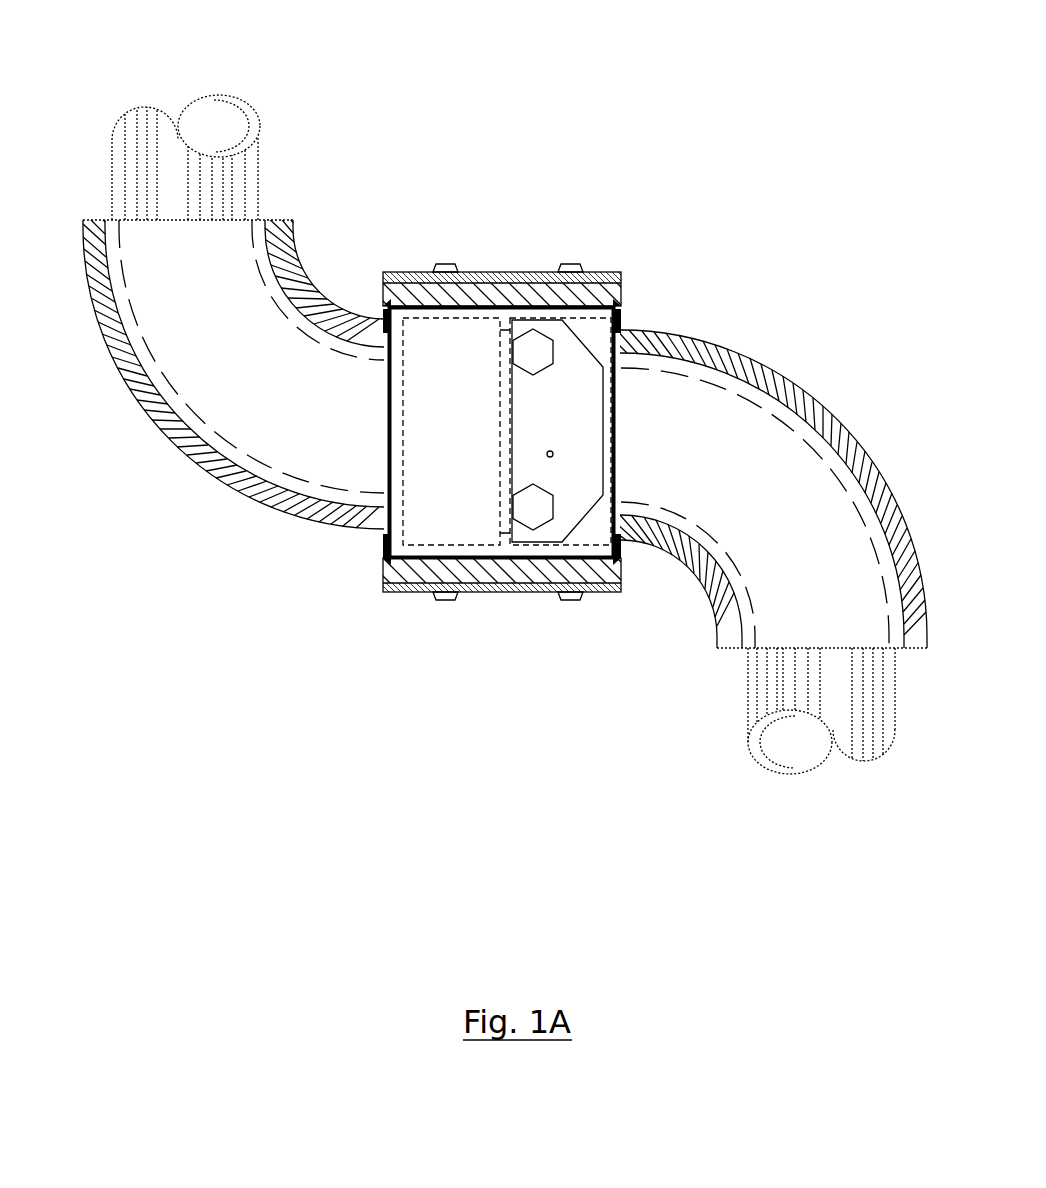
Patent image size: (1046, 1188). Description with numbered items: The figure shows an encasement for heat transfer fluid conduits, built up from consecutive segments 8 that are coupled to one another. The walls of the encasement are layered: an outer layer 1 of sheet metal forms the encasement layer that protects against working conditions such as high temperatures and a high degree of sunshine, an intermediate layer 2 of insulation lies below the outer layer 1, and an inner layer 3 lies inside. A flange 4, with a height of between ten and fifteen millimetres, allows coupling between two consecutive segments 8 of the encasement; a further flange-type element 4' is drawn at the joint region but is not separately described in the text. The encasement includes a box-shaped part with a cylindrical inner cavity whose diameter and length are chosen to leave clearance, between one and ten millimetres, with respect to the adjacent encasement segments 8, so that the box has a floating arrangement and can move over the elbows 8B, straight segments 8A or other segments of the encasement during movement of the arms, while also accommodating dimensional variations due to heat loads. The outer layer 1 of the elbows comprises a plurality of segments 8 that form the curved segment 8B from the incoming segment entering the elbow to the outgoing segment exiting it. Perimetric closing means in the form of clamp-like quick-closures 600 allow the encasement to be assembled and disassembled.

The outer layer 1 is at (320, 292).
The intermediate layer 2 is at (295, 227).
The inner layer 3 is at (383, 573).
The flange 4 is at (512, 394).
The corner seal 4' is at (498, 421).
The segments 8 is at (640, 165).
The straight segments 8A is at (630, 852).
The elbows 8B is at (138, 852).
The clamp-like quick-closures 600 is at (437, 603).